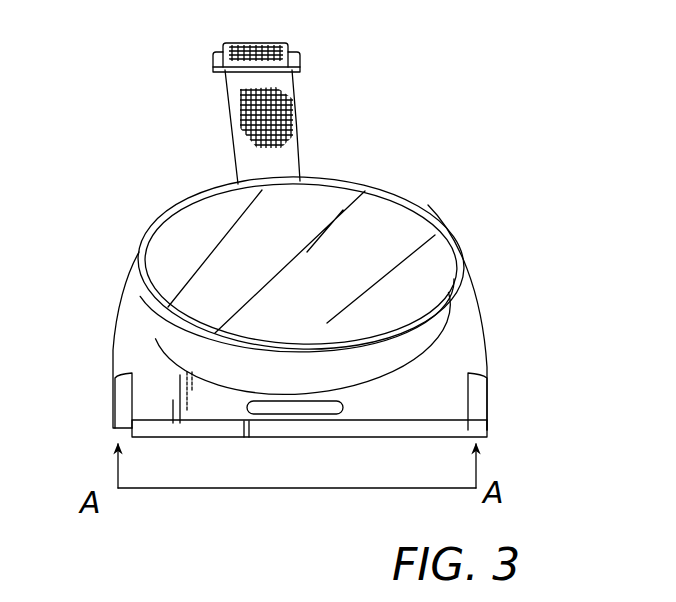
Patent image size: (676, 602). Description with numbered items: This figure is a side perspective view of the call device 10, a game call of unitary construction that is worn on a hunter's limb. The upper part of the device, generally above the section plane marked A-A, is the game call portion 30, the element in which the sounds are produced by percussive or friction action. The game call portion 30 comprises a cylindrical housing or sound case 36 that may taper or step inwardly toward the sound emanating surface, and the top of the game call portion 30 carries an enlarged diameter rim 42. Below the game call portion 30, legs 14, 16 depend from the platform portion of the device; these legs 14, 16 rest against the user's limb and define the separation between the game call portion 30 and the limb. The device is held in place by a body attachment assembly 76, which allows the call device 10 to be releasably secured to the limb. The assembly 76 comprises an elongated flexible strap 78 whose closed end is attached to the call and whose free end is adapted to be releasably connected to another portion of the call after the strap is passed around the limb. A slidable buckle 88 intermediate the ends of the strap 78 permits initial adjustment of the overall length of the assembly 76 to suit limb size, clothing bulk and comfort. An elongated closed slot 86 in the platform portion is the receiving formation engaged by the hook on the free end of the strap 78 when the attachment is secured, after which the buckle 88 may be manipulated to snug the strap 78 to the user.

The call device 10 is at (494, 251).
The leg 14 is at (488, 400).
The leg 16 is at (113, 400).
The game call portion 30 is at (408, 192).
The sound case 36 is at (390, 373).
The rim 42 is at (322, 358).
The body attachment assembly 76 is at (302, 148).
The strap 78 is at (237, 125).
The slot 86 is at (318, 408).
The buckle 88 is at (303, 58).